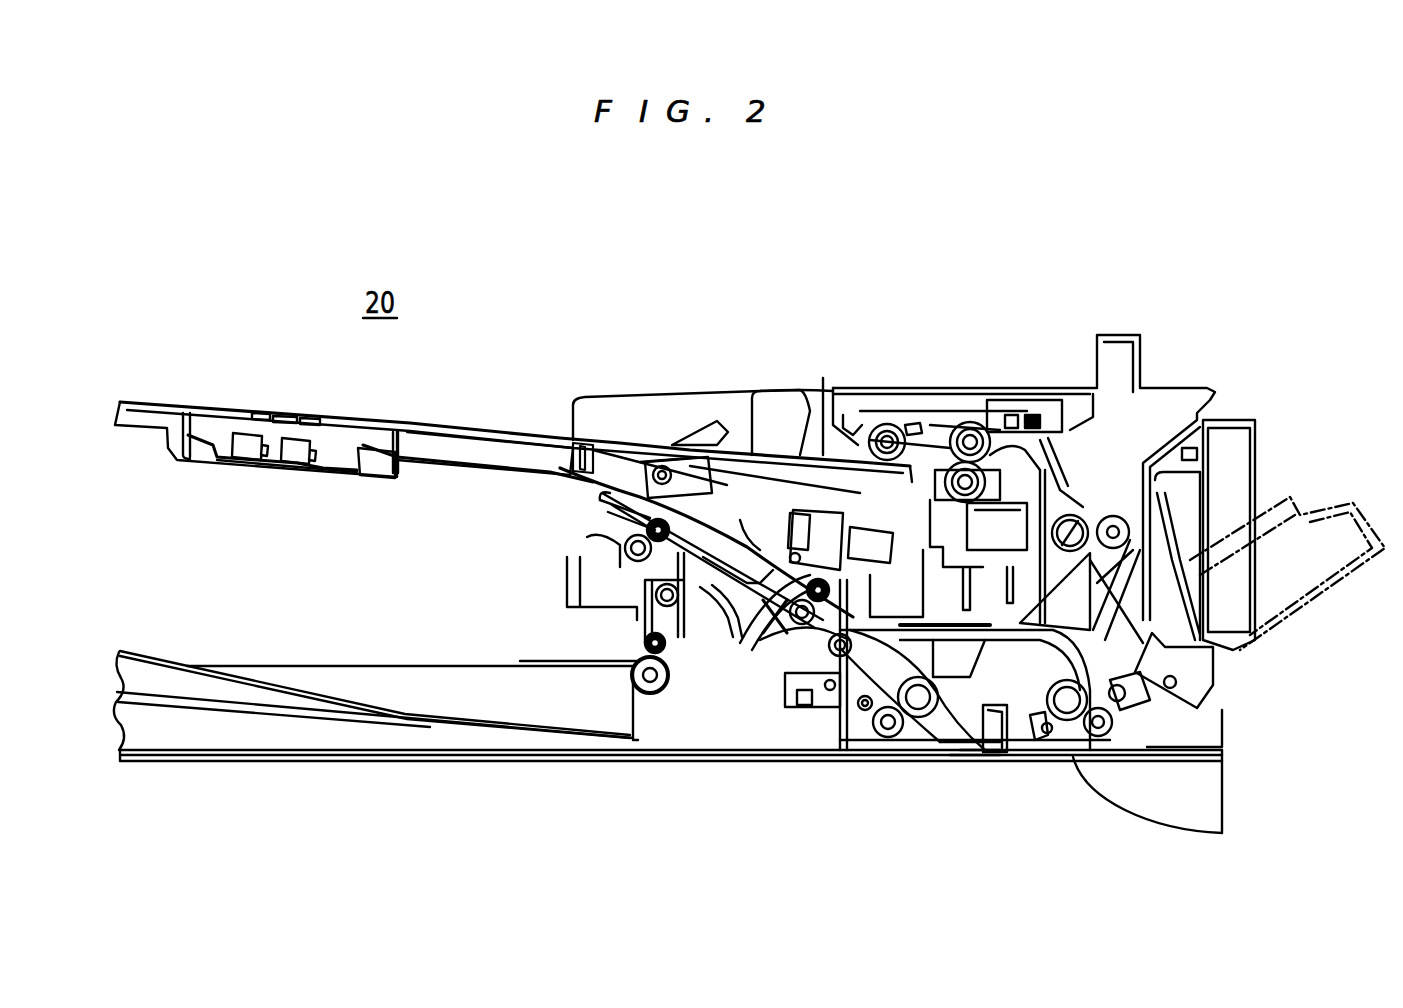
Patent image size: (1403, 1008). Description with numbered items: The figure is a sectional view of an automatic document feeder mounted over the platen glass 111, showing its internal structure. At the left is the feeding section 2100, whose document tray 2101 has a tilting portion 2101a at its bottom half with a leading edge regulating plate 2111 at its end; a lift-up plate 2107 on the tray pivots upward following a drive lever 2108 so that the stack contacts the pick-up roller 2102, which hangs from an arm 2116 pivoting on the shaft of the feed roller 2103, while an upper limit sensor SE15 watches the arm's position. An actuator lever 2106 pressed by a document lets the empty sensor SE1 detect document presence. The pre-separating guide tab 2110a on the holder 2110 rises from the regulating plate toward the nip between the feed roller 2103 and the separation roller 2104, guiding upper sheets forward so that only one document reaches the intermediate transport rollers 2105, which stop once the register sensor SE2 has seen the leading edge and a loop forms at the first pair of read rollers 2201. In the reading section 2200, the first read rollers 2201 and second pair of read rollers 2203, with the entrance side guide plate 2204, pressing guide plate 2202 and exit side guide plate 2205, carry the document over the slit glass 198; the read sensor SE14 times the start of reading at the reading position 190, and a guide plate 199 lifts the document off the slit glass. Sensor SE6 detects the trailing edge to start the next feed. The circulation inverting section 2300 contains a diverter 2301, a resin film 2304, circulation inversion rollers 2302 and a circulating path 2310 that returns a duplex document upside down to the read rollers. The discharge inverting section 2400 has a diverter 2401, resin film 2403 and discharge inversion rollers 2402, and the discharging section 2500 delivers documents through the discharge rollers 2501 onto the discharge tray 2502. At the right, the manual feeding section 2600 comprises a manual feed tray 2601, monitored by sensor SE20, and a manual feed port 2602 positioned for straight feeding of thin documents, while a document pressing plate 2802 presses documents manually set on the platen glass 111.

The platen glass 111 is at (463, 762).
The discharging section 2500 is at (376, 671).
The discharge tray 2502 is at (357, 690).
The document pressing plate 2802 is at (385, 746).
The document tray 2101 is at (513, 399).
The tilting portion 2101a is at (730, 455).
The empty sensor SE1 is at (700, 440).
The actuator lever 2106 is at (690, 455).
The circulation inverting section 2300 is at (742, 471).
The lift-up plate 2107 is at (752, 455).
The feeding section 2100 is at (820, 396).
The drive lever 2108 is at (790, 432).
The pick-up roller 2102 is at (878, 422).
The upper limit sensor SE15 is at (915, 420).
The leading edge regulating plate 2111 is at (928, 440).
The pre-separating guide tab 2110a is at (945, 430).
The arm 2116 is at (970, 422).
The feed roller 2103 is at (982, 462).
The separation roller 2104 is at (995, 455).
The sensor SE6 is at (1022, 420).
The circulating path 2310 is at (1032, 520).
The intermediate transport rollers 2105 is at (1112, 518).
The holder 2110 is at (997, 531).
The sensor SE20 is at (1188, 446).
The manual feed tray 2601 is at (1230, 420).
The manual feeding section 2600 is at (1273, 495).
The manual feed port 2602 is at (1152, 633).
The register sensor SE2 is at (1150, 695).
The reading section 2200 is at (1119, 771).
The first pair of read rollers 2201 is at (1095, 735).
The entrance side guide plate 2204 is at (1045, 737).
The pressing guide plate 2202 is at (1000, 775).
The second pair of read rollers 2203 is at (888, 733).
The exit side guide plate 2205 is at (895, 753).
The read sensor SE14 is at (953, 740).
The guide plate 199 is at (957, 760).
The reading position 190 is at (983, 760).
The slit glass 198 is at (978, 760).
The diverter 2301 is at (840, 690).
The resin film 2304 is at (810, 700).
The circulation inversion rollers 2302 is at (773, 633).
The diverter 2401 is at (768, 650).
The resin film 2403 is at (710, 670).
The discharge inversion rollers 2402 is at (620, 512).
The discharge inverting section 2400 is at (610, 560).
The discharge rollers 2501 is at (622, 673).